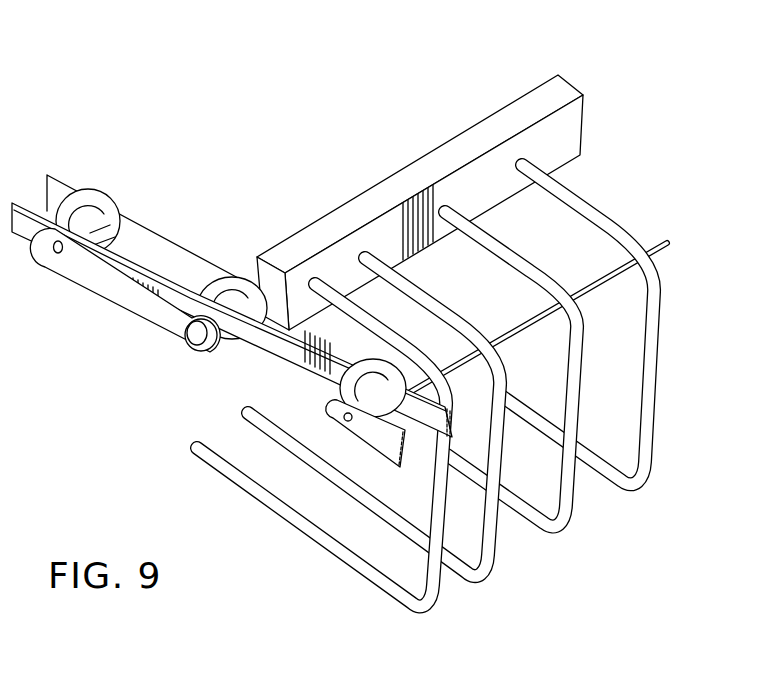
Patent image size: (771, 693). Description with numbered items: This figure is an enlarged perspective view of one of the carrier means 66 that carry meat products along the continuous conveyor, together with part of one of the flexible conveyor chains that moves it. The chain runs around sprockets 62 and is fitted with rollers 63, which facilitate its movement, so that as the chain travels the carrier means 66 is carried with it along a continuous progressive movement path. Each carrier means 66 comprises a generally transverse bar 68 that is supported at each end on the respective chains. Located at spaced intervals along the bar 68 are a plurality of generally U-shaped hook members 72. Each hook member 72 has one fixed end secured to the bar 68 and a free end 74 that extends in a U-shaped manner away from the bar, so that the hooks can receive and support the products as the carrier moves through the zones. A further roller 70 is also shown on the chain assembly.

The carrier means 66 is at (349, 306).
The transverse bar 68 is at (469, 127).
The sprocket 62 is at (232, 283).
The roller 63 is at (90, 206).
The roller 70 is at (258, 258).
The U-shaped hook member 72 is at (585, 203).
The free end 74 is at (247, 408).